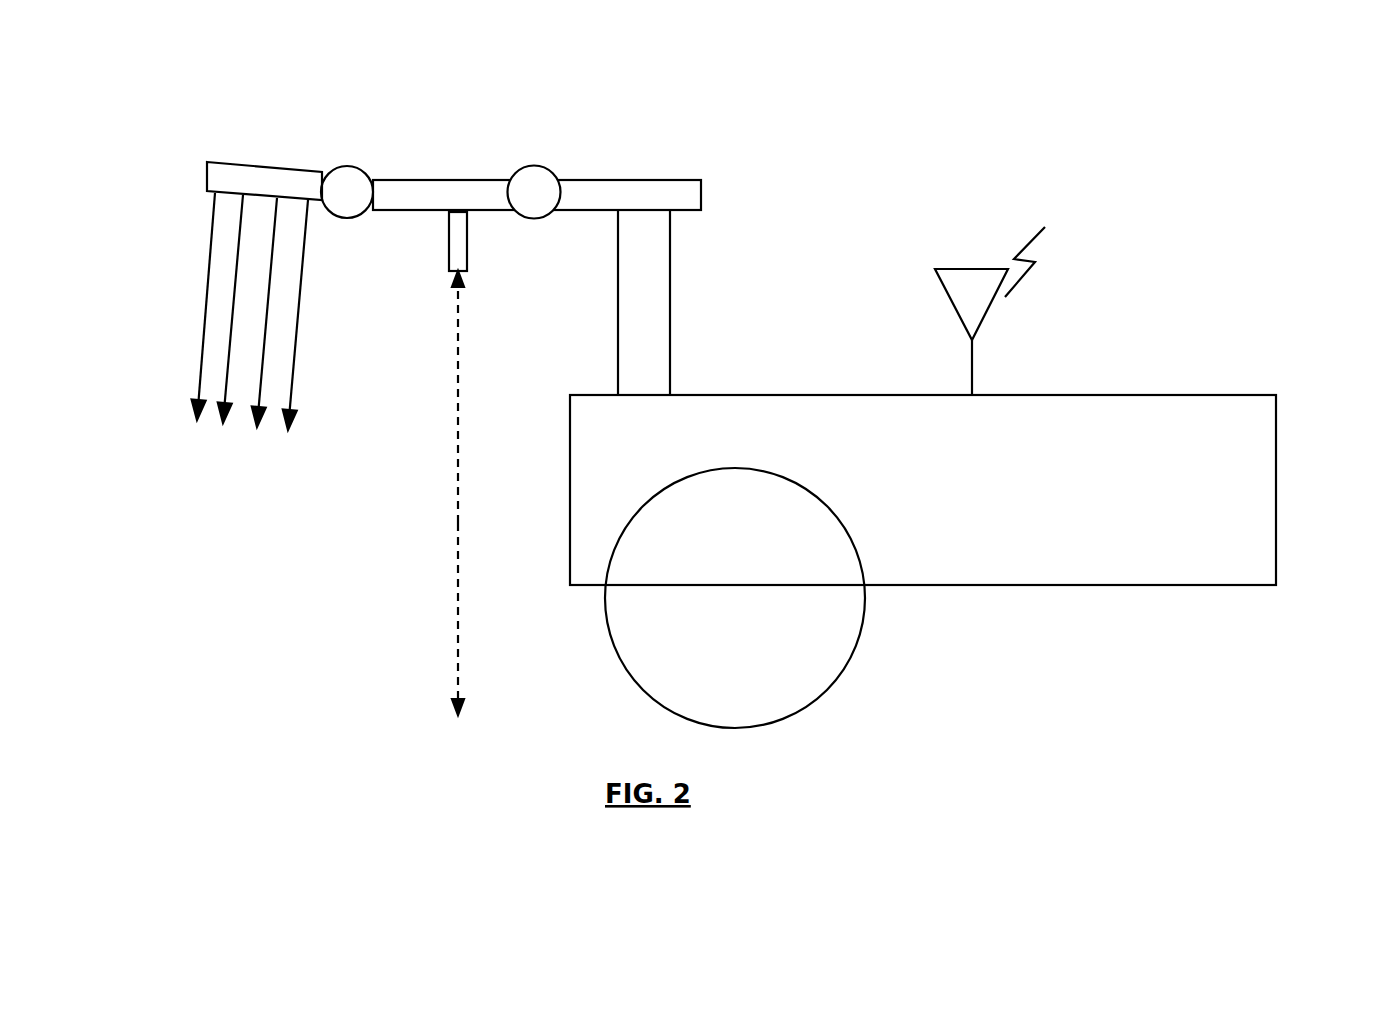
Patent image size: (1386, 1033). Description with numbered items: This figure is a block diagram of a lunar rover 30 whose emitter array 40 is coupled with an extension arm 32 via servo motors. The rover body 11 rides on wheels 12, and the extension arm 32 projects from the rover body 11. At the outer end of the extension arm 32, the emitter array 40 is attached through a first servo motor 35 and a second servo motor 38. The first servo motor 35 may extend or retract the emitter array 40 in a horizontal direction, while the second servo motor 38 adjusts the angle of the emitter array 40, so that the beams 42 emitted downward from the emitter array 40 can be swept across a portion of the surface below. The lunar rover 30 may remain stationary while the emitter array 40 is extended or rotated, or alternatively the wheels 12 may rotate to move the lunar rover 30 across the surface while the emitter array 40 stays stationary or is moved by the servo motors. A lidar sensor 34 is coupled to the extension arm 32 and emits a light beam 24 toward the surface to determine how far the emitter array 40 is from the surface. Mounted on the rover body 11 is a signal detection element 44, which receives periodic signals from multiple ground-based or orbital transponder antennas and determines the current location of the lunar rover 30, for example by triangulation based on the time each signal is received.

The lunar rover 30 is at (1072, 119).
The rover body 11 is at (1276, 458).
The wheels 12 is at (855, 655).
The signal detection element 44 is at (958, 269).
The extension arm 32 is at (701, 180).
The first servo motor 35 is at (535, 165).
The second servo motor 38 is at (348, 166).
The emitter array 40 is at (235, 162).
The beams 42 is at (205, 249).
The lidar sensor 34 is at (449, 242).
The light beam 24 is at (454, 519).